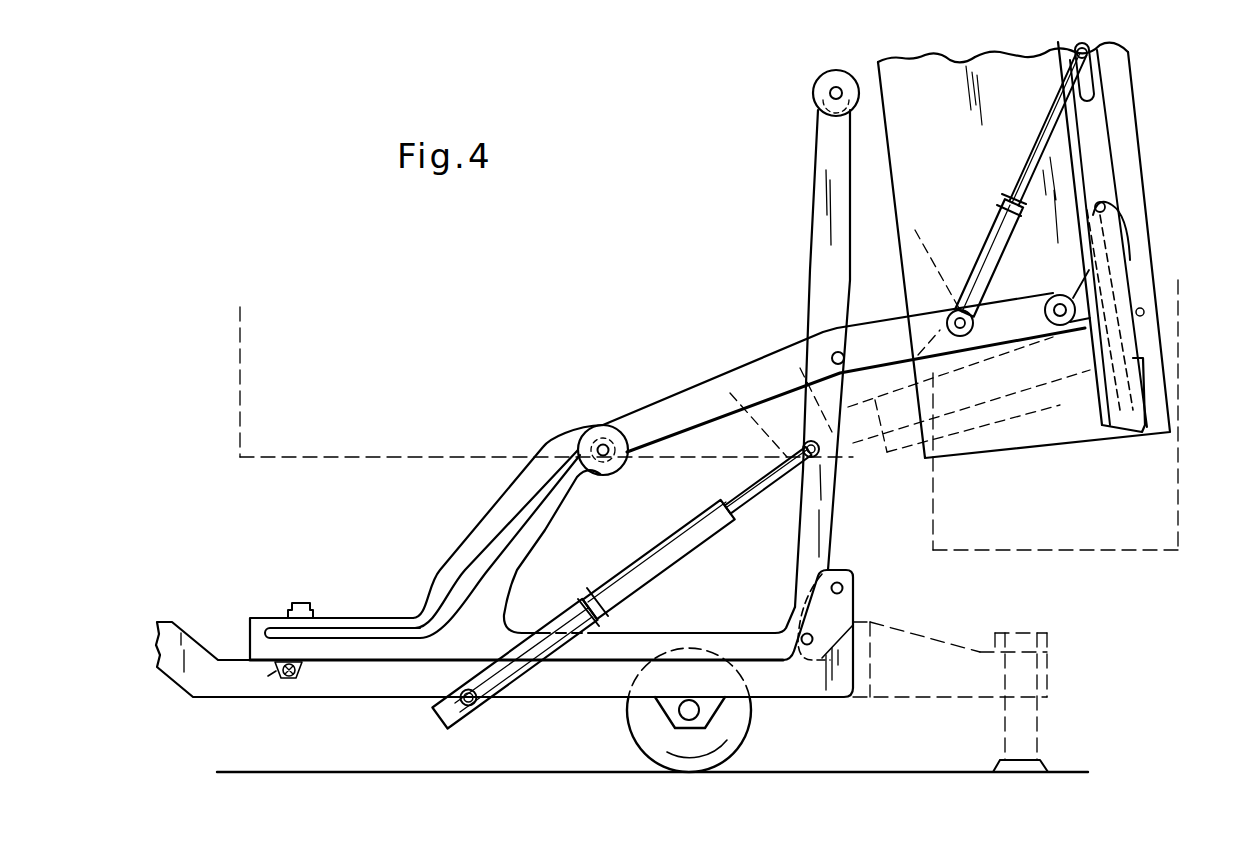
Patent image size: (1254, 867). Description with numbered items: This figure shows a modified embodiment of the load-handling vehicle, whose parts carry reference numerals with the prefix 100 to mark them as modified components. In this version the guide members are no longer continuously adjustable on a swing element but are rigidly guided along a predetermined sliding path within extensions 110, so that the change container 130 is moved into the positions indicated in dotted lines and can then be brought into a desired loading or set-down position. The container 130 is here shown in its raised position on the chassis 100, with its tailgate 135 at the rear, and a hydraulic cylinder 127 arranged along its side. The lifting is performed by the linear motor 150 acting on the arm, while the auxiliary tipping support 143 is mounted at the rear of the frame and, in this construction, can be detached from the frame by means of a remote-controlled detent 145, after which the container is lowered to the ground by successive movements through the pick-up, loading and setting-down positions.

The modified embodiment prefix 100 is at (392, 685).
The extension 110 is at (565, 490).
The tailgate hydraulic cylinder 127 is at (997, 231).
The hopper 130 is at (953, 159).
The tailgate 135 is at (1135, 377).
The auxiliary tipping support 143 is at (670, 637).
The remote-controlled detent 145 is at (292, 680).
The lifting hydraulic cylinder 150 is at (629, 580).